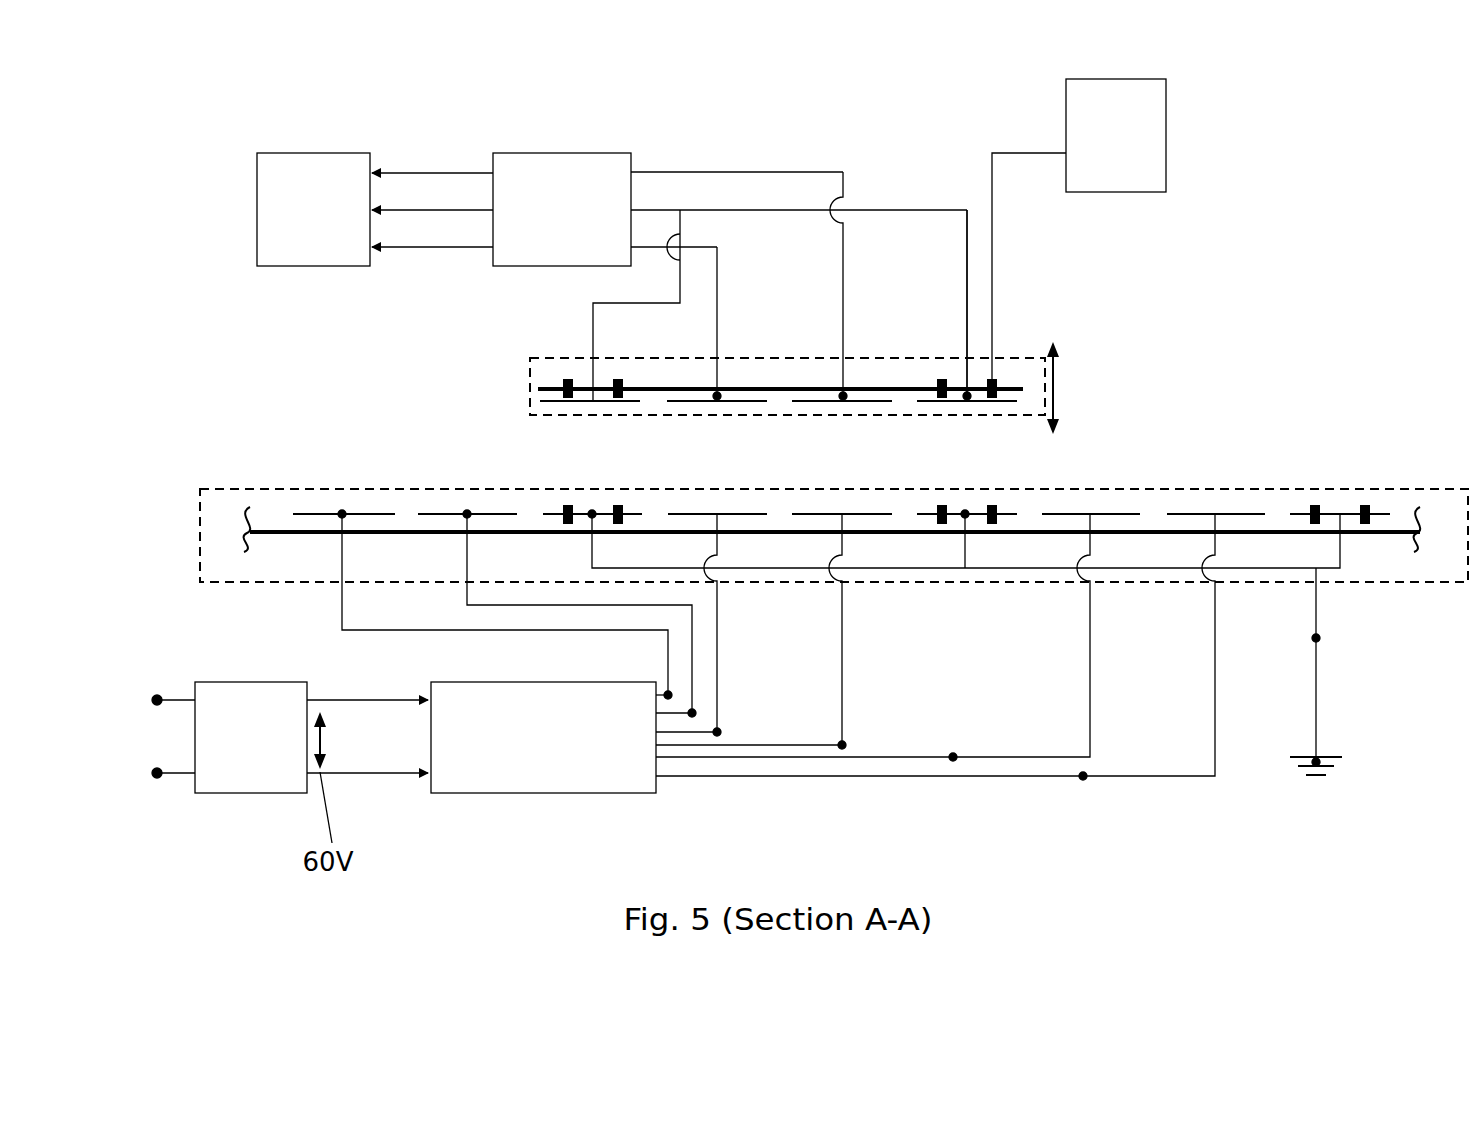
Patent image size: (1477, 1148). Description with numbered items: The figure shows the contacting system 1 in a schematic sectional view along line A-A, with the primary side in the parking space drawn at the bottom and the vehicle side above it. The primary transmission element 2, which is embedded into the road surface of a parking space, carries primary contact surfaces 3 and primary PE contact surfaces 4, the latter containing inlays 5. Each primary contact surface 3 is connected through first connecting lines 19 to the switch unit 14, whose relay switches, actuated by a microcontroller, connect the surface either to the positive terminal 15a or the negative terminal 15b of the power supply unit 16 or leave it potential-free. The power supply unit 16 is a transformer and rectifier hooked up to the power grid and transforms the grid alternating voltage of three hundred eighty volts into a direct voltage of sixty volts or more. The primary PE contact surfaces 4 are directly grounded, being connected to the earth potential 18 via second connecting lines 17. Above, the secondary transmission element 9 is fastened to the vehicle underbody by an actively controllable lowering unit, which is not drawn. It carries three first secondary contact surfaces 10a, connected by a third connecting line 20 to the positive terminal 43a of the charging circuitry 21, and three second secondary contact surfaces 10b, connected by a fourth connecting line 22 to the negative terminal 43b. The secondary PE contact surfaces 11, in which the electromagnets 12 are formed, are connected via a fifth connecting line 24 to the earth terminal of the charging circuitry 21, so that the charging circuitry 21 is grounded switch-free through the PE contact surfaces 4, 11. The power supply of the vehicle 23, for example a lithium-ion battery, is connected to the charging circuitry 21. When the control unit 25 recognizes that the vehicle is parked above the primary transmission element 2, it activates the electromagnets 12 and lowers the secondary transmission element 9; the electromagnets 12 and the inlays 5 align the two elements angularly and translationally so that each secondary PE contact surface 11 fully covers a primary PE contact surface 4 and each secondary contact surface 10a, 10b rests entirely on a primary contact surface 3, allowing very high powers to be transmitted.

The contacting system 1 is at (1292, 260).
The primary transmission element 2 is at (246, 489).
The primary contact surface 3 is at (467, 514).
The primary PE contact surface 4 is at (592, 514).
The inlay 5 is at (556, 508).
The secondary transmission element 9 is at (530, 378).
The first secondary contact surface 10a is at (717, 396).
The second secondary contact surface 10b is at (843, 396).
The secondary PE contact surface 11 is at (967, 396).
The electromagnet 12 is at (563, 385).
The switch unit 14 is at (518, 732).
The positive terminal 15a is at (338, 700).
The negative terminal 15b is at (397, 773).
The power supply unit 16 is at (233, 733).
The second connecting line 17 is at (1316, 638).
The earth potential 18 is at (1322, 766).
The first connecting line 19 is at (1083, 776).
The third connecting line 20 is at (843, 172).
The charging circuitry 21 is at (557, 190).
The fourth connecting line 22 is at (643, 247).
The power supply of the vehicle 23 is at (293, 190).
The fifth connecting line 24 is at (780, 210).
The control unit 25 is at (1079, 234).
The positive terminal 43a is at (609, 156).
The negative terminal 43b is at (602, 259).